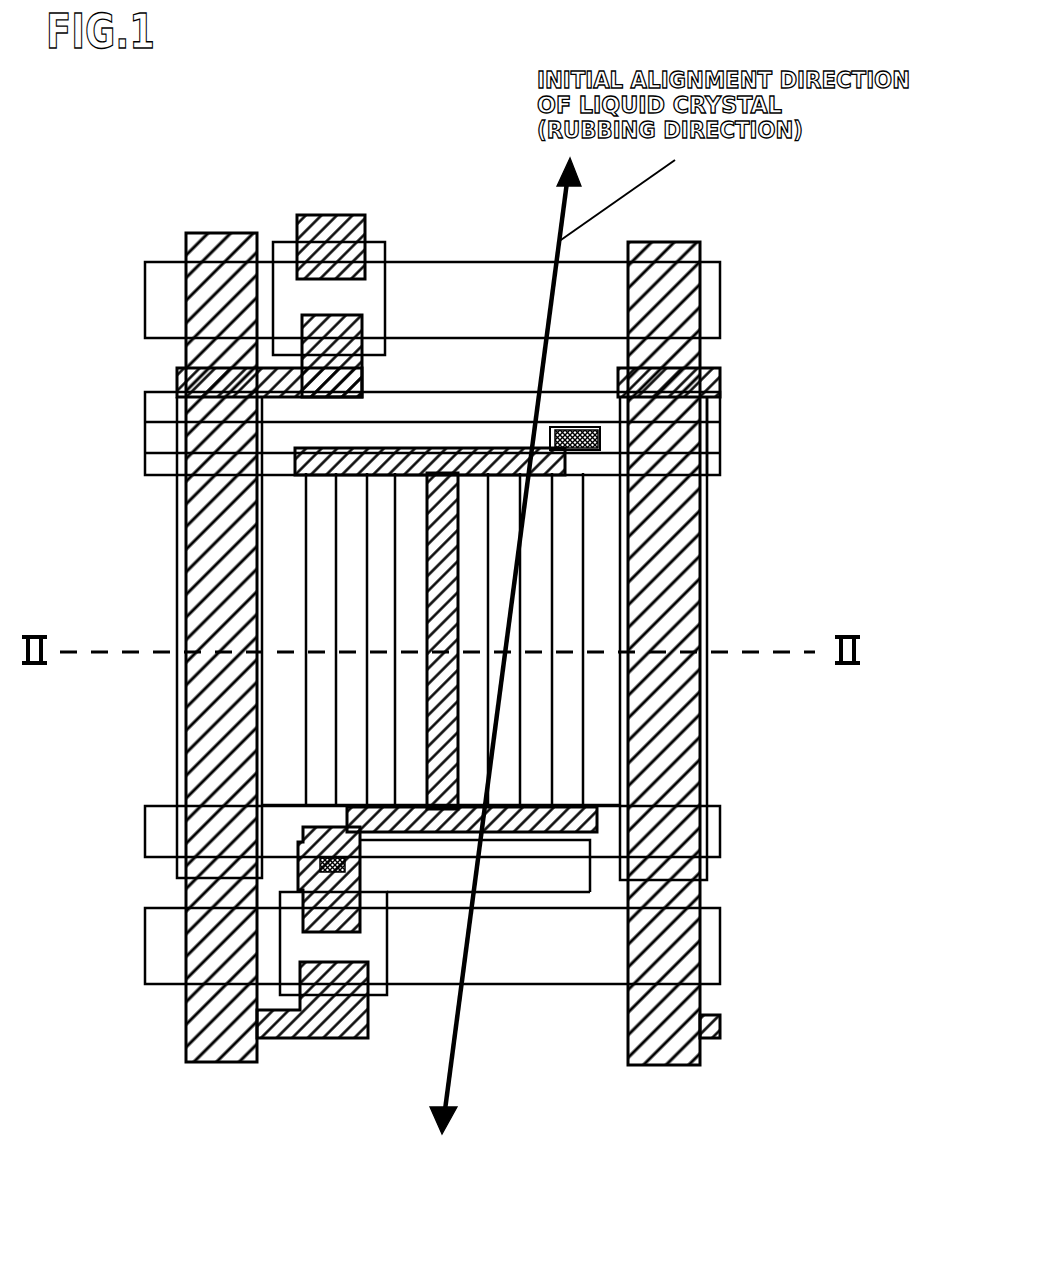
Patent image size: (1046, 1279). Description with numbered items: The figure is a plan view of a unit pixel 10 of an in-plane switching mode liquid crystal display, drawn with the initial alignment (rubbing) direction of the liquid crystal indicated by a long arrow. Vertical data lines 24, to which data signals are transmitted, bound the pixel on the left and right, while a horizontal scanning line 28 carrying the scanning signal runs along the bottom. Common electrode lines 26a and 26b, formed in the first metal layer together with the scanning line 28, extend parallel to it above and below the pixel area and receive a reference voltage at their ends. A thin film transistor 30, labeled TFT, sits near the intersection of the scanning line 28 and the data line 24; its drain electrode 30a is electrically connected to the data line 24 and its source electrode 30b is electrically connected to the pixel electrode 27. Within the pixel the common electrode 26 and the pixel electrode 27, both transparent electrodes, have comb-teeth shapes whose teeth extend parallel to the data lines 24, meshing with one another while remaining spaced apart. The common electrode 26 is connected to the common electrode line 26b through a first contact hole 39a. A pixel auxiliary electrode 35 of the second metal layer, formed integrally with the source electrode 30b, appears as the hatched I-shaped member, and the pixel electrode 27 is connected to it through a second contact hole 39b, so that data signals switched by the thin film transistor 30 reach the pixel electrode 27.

The unit pixel 10 is at (100, 166).
The data line 24 is at (177, 531).
The common electrode 26 is at (513, 692).
The common electrode line 26a is at (713, 829).
The common electrode line 26b is at (720, 475).
The pixel electrode 27 is at (567, 528).
The scanning line 28 is at (713, 943).
The thin film transistor 30 is at (390, 932).
The drain electrode 30a is at (338, 1018).
The source electrode 30b is at (303, 922).
The pixel auxiliary electrode 35 is at (530, 477).
The first contact hole 39a is at (600, 432).
The second contact hole 39b is at (297, 868).